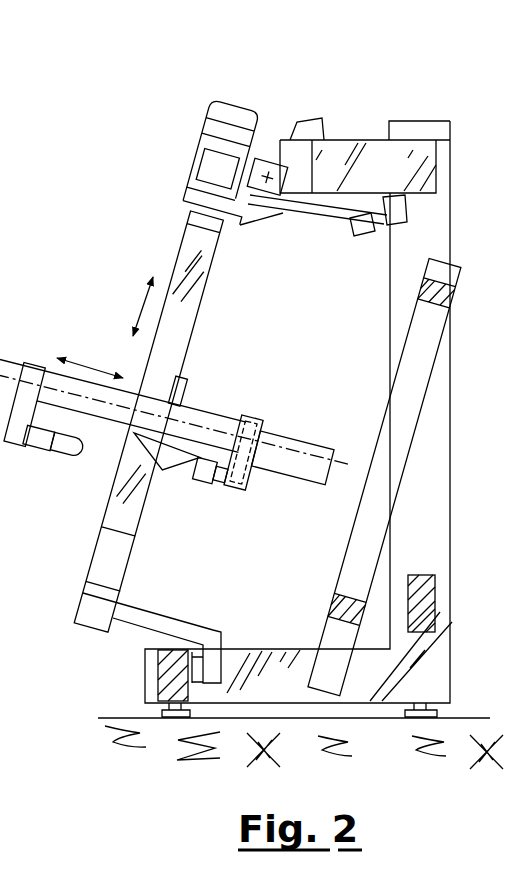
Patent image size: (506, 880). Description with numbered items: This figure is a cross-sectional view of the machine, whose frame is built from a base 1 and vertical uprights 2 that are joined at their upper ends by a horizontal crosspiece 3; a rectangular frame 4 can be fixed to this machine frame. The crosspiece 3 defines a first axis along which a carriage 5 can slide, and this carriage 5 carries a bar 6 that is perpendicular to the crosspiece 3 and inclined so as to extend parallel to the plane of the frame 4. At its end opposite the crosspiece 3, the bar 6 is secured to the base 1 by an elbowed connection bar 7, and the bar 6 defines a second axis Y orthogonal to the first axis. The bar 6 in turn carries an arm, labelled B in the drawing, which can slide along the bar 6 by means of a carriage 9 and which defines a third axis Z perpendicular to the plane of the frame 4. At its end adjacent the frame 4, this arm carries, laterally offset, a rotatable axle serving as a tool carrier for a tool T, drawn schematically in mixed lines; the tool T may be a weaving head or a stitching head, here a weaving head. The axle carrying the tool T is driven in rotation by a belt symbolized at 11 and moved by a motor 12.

The base 1 is at (283, 662).
The vertical uprights 2 is at (432, 522).
The horizontal crosspiece 3 is at (260, 163).
The rectangular frame 4 is at (412, 290).
The carriage 5 is at (196, 139).
The bar 6 is at (186, 312).
The elbowed connection bar 7 is at (152, 620).
The carriage 9 is at (188, 398).
The belt 11 is at (242, 420).
The motor 12 is at (203, 475).
The arm / beam B is at (110, 420).
The tool T is at (313, 446).
The second axis Y is at (134, 306).
The third axis Z is at (90, 354).